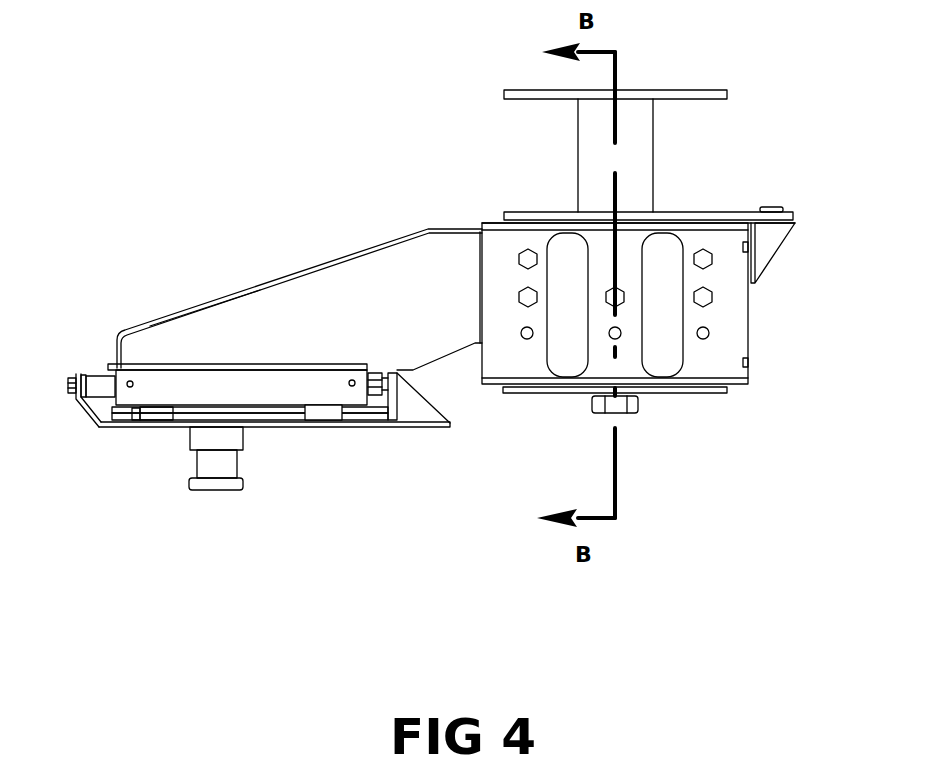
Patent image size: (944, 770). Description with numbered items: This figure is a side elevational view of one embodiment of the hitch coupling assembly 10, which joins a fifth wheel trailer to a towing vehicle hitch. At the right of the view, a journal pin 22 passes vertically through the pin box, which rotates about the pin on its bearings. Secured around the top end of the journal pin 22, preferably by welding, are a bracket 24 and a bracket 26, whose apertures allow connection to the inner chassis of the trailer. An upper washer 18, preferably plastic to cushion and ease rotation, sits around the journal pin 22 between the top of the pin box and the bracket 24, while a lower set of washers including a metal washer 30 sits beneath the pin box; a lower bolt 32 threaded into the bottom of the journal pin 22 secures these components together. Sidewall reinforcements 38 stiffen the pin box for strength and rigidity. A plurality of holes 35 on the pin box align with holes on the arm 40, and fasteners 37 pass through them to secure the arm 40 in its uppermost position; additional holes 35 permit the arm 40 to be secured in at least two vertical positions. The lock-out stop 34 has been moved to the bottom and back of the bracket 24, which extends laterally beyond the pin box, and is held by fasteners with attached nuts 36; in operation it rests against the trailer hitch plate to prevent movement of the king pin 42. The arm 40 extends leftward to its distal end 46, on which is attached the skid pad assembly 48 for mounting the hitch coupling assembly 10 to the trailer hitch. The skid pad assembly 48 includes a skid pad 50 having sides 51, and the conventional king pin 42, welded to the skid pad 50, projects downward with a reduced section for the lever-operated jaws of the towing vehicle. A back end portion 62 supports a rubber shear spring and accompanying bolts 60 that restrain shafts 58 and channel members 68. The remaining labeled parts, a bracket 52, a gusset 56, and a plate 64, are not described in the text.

The hitch coupling assembly 10 is at (402, 158).
The upper washer 18 is at (727, 390).
The journal pin 22 is at (637, 155).
The bracket 24 is at (717, 210).
The bracket 26 is at (718, 88).
The washer 30 is at (668, 397).
The lower bolt 32 is at (620, 413).
The lock-out stop 34 is at (768, 245).
The holes 35 is at (708, 336).
The nuts 36 is at (778, 208).
The fasteners 37 is at (518, 286).
The sidewall reinforcements 38 is at (565, 340).
The arm 40 is at (273, 258).
The king pin 42 is at (213, 493).
The distal end 46 is at (158, 318).
The skid pad assembly 48 is at (413, 435).
The skid pad 50 is at (150, 430).
The sides 51 is at (315, 428).
The angle bracket 52 is at (85, 415).
The gusset 56 is at (427, 415).
The shafts 58 is at (100, 373).
The bolts 60 is at (69, 375).
The back end portion 62 is at (398, 403).
The plate 64 is at (303, 390).
The channel members 68 is at (325, 417).